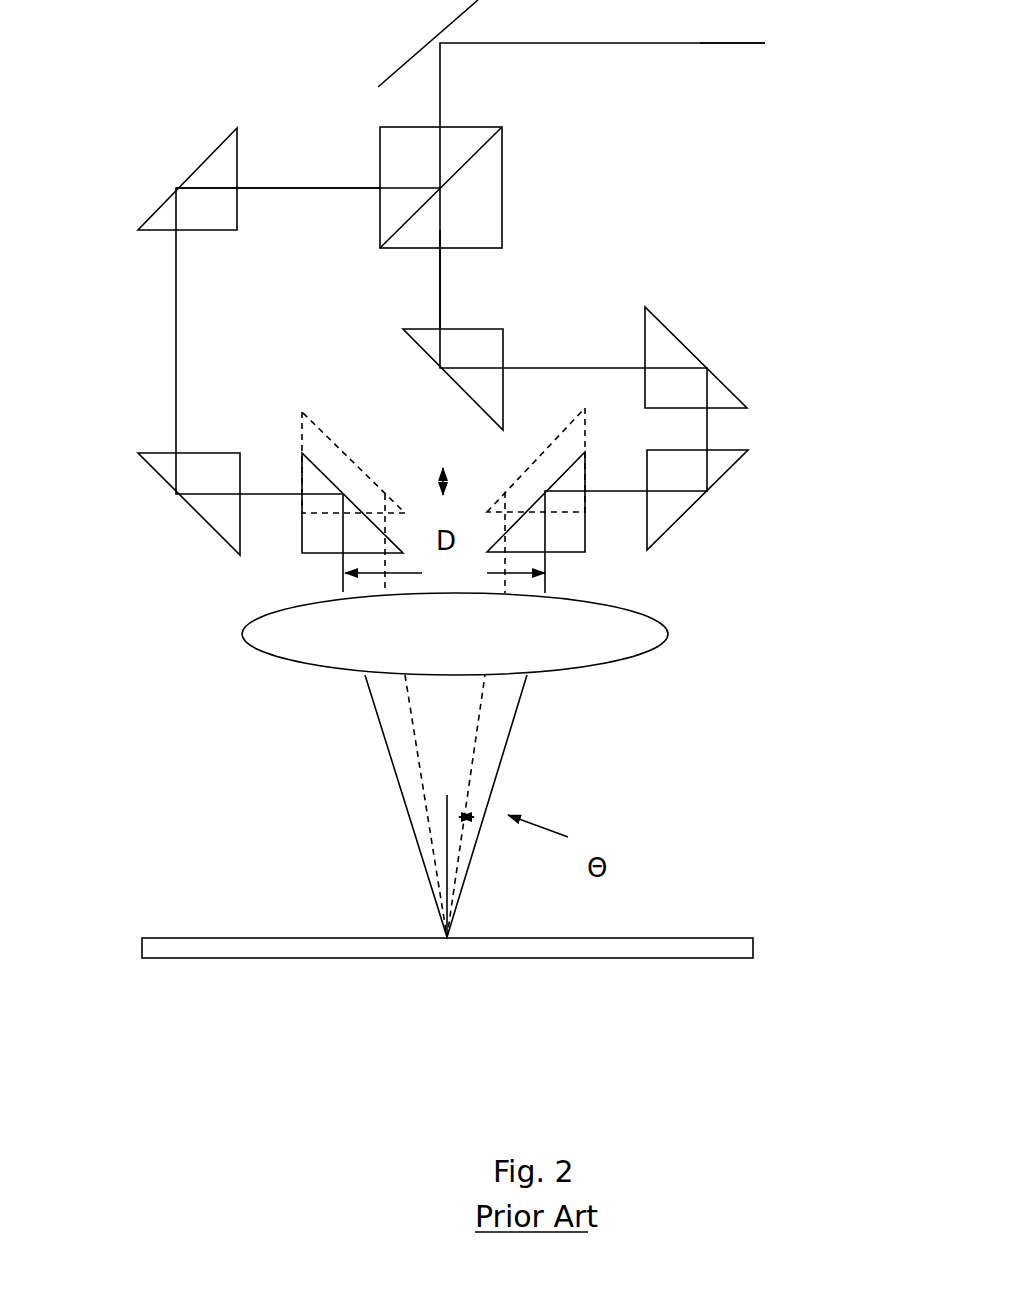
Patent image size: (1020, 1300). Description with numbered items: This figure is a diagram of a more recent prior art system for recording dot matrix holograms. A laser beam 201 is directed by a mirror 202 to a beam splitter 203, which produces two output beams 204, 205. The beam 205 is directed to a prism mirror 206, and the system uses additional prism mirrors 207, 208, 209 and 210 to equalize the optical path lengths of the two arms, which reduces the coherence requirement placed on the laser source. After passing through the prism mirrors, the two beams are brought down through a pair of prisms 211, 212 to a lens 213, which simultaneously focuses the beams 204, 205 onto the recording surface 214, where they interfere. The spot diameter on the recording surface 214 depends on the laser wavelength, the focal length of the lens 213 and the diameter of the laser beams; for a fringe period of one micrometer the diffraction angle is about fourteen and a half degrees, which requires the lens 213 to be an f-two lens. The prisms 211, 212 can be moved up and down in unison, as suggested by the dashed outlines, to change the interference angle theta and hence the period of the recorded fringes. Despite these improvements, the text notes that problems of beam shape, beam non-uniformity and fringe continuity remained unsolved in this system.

The laser beam 201 is at (743, 45).
The mirror 202 is at (440, 30).
The beam splitter 203 is at (502, 172).
The output beam 204 is at (278, 183).
The output beam 205 is at (440, 288).
The prism mirror 206 is at (505, 345).
The prism mirror 207 is at (737, 388).
The prism mirror 208 is at (737, 467).
The prism mirror 209 is at (145, 212).
The prism mirror 210 is at (152, 470).
The prism 211 is at (302, 535).
The prism 212 is at (590, 535).
The lens 213 is at (578, 670).
The recording surface 214 is at (753, 947).